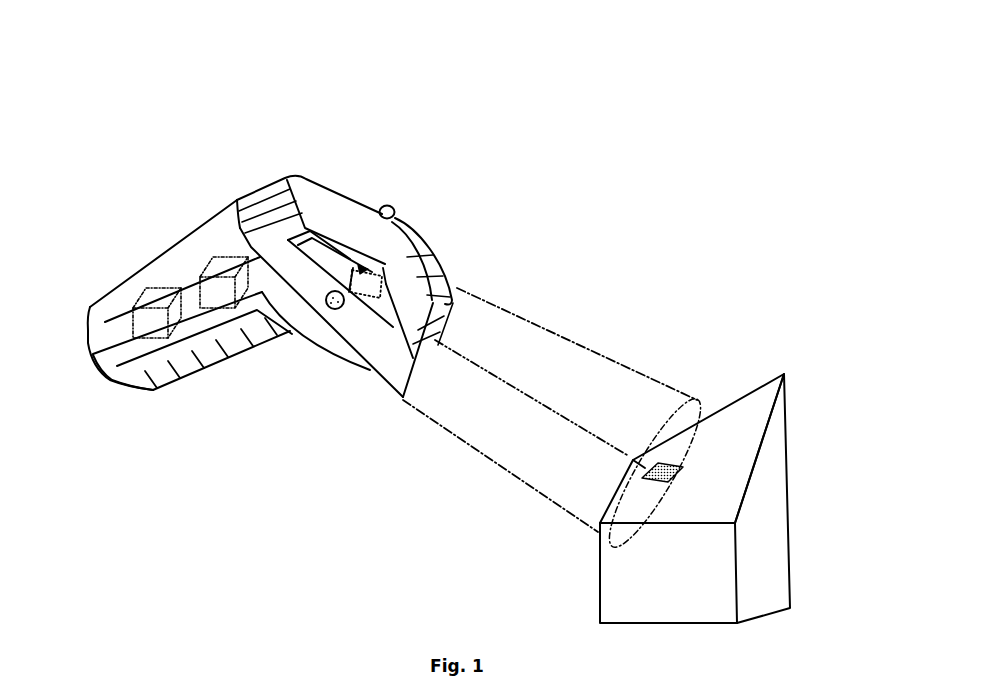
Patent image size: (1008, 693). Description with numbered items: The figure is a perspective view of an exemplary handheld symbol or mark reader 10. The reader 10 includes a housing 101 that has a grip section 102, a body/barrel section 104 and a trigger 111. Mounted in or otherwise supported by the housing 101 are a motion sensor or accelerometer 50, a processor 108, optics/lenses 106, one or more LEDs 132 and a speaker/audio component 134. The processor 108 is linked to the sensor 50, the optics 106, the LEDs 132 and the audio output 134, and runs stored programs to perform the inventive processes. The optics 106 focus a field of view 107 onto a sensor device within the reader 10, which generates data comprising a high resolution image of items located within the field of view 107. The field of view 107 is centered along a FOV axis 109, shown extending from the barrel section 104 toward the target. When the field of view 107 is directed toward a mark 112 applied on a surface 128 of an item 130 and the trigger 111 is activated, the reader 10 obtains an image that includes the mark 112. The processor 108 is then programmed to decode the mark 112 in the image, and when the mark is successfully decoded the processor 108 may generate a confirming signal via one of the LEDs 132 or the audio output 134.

The handheld symbol or mark reader 10 is at (373, 162).
The motion sensor or accelerometer 50 is at (228, 243).
The housing 101 is at (192, 277).
The grip section 102 is at (108, 364).
The body/barrel section 104 is at (407, 228).
The optics/lenses 106 is at (458, 289).
The field of view 107 is at (490, 460).
The processor 108 is at (147, 287).
The FOV axis 109 is at (494, 373).
The trigger 111 is at (198, 373).
The mark 112 is at (633, 460).
The surface 128 is at (745, 448).
The item 130 is at (760, 506).
The LEDs 132 is at (386, 205).
The speaker/audio component 134 is at (343, 305).